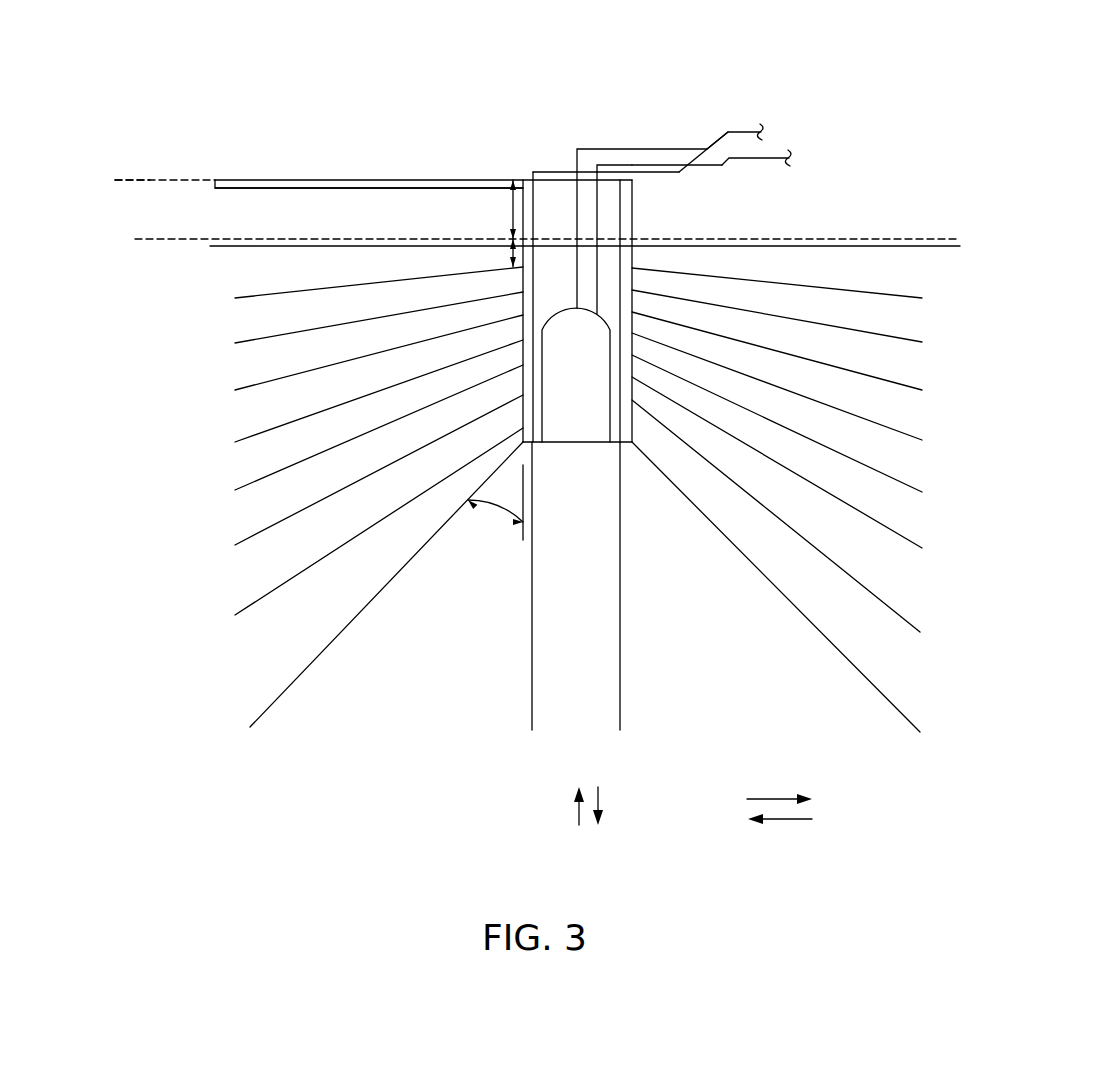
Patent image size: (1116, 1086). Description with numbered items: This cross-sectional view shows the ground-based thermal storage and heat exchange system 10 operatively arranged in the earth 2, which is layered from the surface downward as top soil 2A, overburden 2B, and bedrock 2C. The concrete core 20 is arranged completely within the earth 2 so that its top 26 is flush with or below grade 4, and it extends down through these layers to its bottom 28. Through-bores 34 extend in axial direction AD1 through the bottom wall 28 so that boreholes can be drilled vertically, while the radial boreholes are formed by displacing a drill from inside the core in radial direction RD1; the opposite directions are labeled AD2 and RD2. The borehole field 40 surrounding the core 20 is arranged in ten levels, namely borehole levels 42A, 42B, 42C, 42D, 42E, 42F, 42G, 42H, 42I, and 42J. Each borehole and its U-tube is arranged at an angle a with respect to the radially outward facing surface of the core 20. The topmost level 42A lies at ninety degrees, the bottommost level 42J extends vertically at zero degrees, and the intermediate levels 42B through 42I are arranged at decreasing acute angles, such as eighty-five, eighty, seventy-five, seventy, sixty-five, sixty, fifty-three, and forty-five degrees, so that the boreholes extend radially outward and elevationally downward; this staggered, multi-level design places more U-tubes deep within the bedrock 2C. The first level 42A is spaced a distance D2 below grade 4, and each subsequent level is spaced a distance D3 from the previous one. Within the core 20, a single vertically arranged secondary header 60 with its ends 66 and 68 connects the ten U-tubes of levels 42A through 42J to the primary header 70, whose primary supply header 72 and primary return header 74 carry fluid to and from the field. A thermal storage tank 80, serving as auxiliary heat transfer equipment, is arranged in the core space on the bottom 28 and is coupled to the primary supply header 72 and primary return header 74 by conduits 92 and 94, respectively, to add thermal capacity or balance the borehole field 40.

The earth 2 is at (335, 226).
The top soil 2A is at (100, 183).
The overburden 2B is at (100, 213).
The bedrock 2C is at (100, 265).
The grade 4 is at (343, 179).
The ground-based thermal storage and heat exchange system 10 is at (820, 86).
The core 20 is at (632, 277).
The top surface 26 is at (548, 172).
The bottom surface 28 is at (578, 446).
The through-bores 34 is at (534, 446).
The borehole field 40 is at (100, 368).
The first borehole level 42A is at (250, 240).
The borehole level 42B is at (255, 294).
The borehole level 42C is at (245, 340).
The borehole level 42D is at (250, 387).
The borehole level 42E is at (250, 438).
The borehole level 42F is at (250, 487).
The borehole level 42G is at (250, 540).
The borehole level 42H is at (250, 612).
The borehole level 42I is at (258, 724).
The last borehole level 42J is at (532, 662).
The secondary header 60 is at (545, 243).
The end 66 is at (532, 173).
The end 68 is at (524, 446).
The primary header 70 is at (646, 151).
The primary supply header 72 is at (740, 131).
The primary return header 74 is at (768, 159).
The thermal storage tank 80 is at (587, 375).
The conduit 92 is at (624, 148).
The conduit 94 is at (673, 164).
The distance D2 is at (513, 207).
The distance D3 is at (513, 256).
The angle a is at (493, 507).
The axial direction AD1 is at (600, 797).
The axial direction AD2 is at (577, 808).
The radial direction RD1 is at (788, 795).
The radial direction RD2 is at (773, 822).